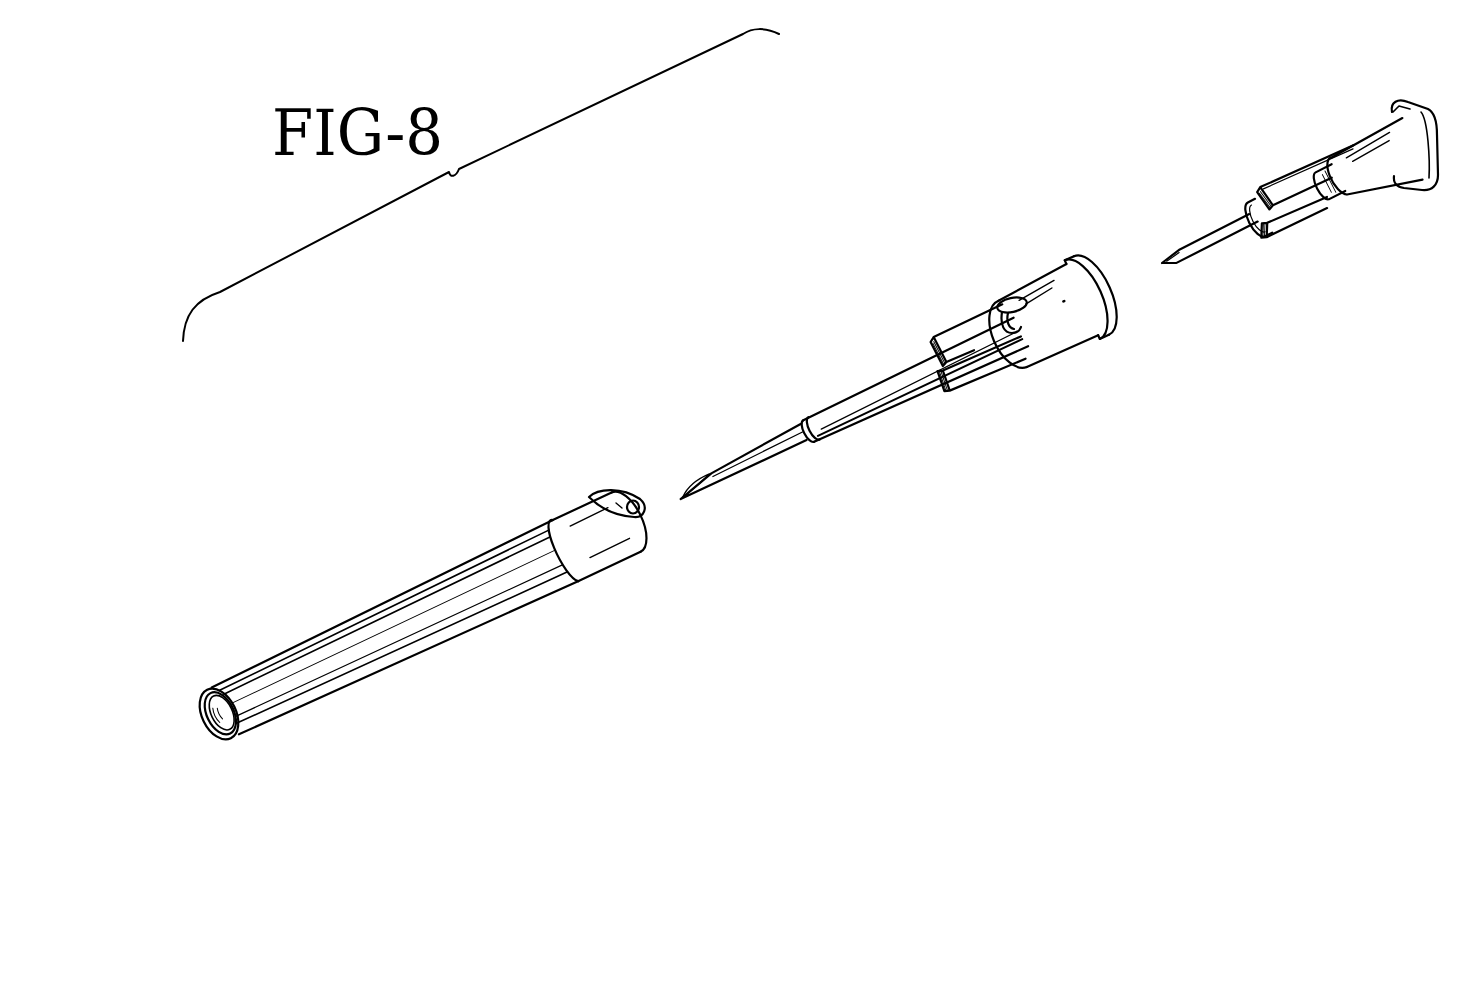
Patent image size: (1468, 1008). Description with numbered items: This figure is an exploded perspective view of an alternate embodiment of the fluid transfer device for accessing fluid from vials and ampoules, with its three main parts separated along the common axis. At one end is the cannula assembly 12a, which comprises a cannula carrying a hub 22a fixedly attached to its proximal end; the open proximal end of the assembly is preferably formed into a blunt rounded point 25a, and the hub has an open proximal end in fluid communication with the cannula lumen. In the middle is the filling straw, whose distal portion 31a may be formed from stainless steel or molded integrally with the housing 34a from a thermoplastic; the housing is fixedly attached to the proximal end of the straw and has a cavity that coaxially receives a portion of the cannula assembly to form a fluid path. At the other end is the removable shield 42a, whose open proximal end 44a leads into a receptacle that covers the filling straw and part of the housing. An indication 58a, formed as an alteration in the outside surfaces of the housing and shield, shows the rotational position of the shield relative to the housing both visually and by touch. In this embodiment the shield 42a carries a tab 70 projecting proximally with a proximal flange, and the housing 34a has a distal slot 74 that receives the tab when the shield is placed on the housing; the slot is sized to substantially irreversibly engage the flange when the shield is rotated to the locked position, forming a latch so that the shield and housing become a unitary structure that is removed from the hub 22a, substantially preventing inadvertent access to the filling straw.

The cannula assembly 12a is at (1268, 187).
The hub 22a is at (1393, 187).
The blunt rounded point 25a is at (1161, 263).
The distal portion 31a is at (748, 447).
The housing 34a is at (1057, 353).
The shield 42a is at (361, 607).
The open proximal end 44a is at (645, 538).
The indication 58a is at (602, 503).
The tab 70 is at (638, 504).
The distal slot 74 is at (1007, 333).